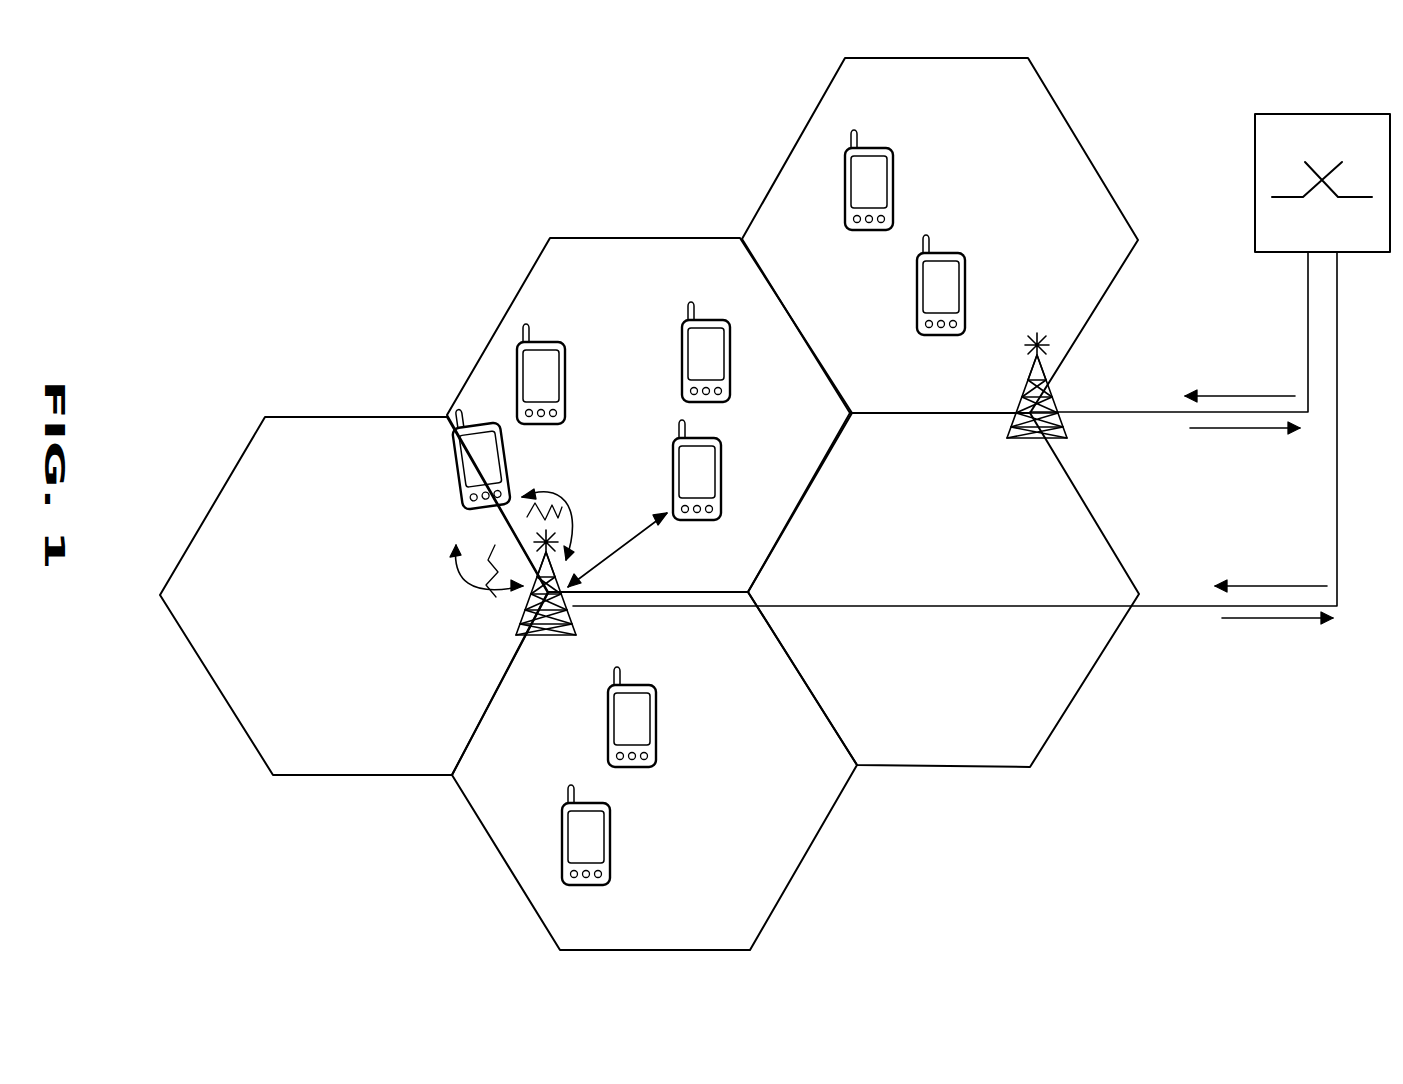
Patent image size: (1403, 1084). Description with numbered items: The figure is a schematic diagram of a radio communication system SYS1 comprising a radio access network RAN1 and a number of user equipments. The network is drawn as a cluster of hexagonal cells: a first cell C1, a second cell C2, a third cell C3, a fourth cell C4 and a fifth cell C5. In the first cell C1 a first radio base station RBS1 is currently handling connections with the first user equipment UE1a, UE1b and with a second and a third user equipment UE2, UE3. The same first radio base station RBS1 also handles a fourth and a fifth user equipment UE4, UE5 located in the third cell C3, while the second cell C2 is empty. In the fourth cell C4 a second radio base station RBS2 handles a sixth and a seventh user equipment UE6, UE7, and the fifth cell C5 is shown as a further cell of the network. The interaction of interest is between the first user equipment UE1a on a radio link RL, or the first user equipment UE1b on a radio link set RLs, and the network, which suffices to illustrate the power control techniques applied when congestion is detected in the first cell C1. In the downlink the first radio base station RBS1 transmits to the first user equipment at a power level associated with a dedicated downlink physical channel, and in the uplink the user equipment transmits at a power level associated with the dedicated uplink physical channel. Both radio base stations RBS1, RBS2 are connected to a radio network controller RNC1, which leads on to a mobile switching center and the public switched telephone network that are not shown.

The radio communication system SYS1 is at (323, 178).
The radio access network RAN1 is at (542, 152).
The first cell C1 is at (512, 302).
The second cell C2 is at (335, 776).
The third cell C3 is at (803, 853).
The fourth cell C4 is at (806, 128).
The fifth cell C5 is at (998, 765).
The radio network controller RNC1 is at (1255, 166).
The first radio base station RBS1 is at (560, 638).
The second radio base station RBS2 is at (1068, 425).
The first user equipment UE1a is at (778, 473).
The first user equipment UE1b is at (457, 472).
The second user equipment UE2 is at (625, 375).
The third user equipment UE3 is at (785, 353).
The fourth user equipment UE4 is at (713, 718).
The fifth user equipment UE5 is at (668, 837).
The sixth user equipment UE6 is at (950, 182).
The seventh user equipment UE7 is at (1023, 293).
The radio link RL is at (606, 560).
The radio link set RLs is at (512, 543).